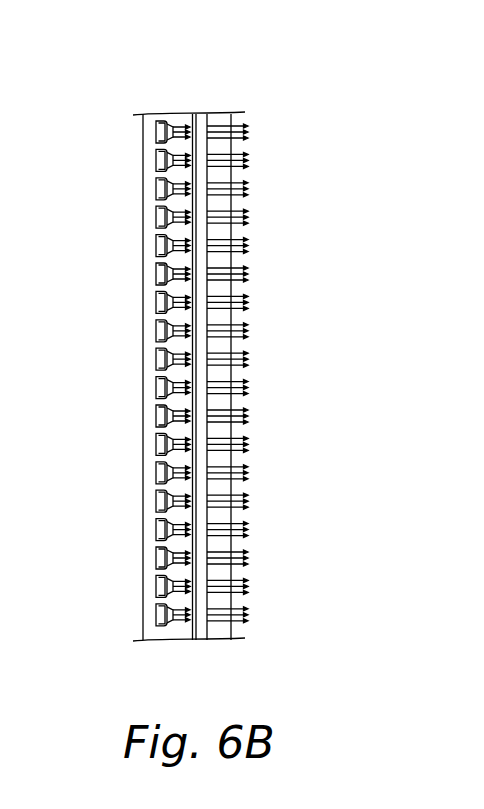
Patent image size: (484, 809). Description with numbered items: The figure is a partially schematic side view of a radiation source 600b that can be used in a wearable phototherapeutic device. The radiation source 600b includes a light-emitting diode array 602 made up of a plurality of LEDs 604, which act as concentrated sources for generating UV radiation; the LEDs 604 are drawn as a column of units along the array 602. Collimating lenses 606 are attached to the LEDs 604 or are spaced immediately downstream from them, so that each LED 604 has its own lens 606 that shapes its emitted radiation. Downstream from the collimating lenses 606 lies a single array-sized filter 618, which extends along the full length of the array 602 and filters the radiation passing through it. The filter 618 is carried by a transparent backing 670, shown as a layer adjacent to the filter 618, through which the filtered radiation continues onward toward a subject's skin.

The radiation source 600b is at (114, 124).
The light-emitting diode (LED) array 602 is at (143, 255).
The LED 604 is at (163, 625).
The collimating lens 606 is at (157, 610).
The filter 618 is at (193, 120).
The transparent backing 670 is at (200, 622).